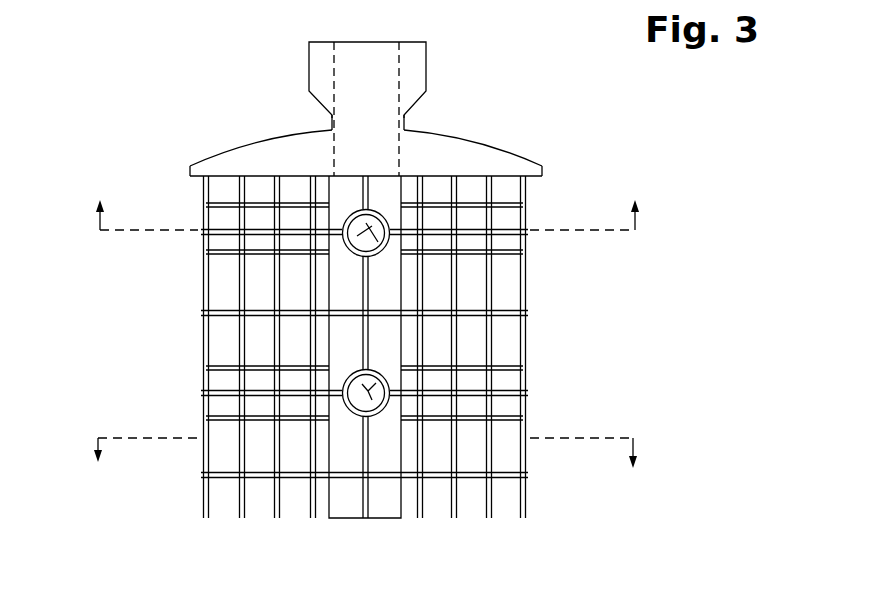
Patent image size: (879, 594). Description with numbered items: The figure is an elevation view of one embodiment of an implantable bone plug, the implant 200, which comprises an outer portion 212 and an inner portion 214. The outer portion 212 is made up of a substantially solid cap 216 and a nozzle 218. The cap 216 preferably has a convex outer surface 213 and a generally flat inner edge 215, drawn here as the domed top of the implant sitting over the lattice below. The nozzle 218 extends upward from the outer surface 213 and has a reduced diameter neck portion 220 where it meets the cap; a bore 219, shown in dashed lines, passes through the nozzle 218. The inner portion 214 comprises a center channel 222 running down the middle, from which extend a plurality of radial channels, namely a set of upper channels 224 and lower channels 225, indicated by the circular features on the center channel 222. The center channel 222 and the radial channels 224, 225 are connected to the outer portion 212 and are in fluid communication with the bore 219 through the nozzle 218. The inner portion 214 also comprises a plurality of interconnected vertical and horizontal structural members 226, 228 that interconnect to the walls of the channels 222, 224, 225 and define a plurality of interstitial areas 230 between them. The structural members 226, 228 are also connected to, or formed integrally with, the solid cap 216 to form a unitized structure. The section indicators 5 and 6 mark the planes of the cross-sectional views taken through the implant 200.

The implant 200 is at (146, 98).
The outer portion 212 is at (509, 116).
The convex outer surface 213 is at (505, 158).
The inner portion 214 is at (563, 400).
The inner edge 215 is at (513, 178).
The cap 216 is at (244, 143).
The nozzle 218 is at (308, 62).
The bore 219 is at (392, 52).
The neck portion 220 is at (406, 118).
The center channel 222 is at (385, 510).
The upper channels 224 is at (379, 248).
The lower channels 225 is at (379, 376).
The vertical structural members 226 is at (205, 275).
The horizontal structural members 228 is at (220, 316).
The interstitial areas 230 is at (226, 457).
The section line 5- 5 is at (371, 196).
The section line 6- 6 is at (368, 474).